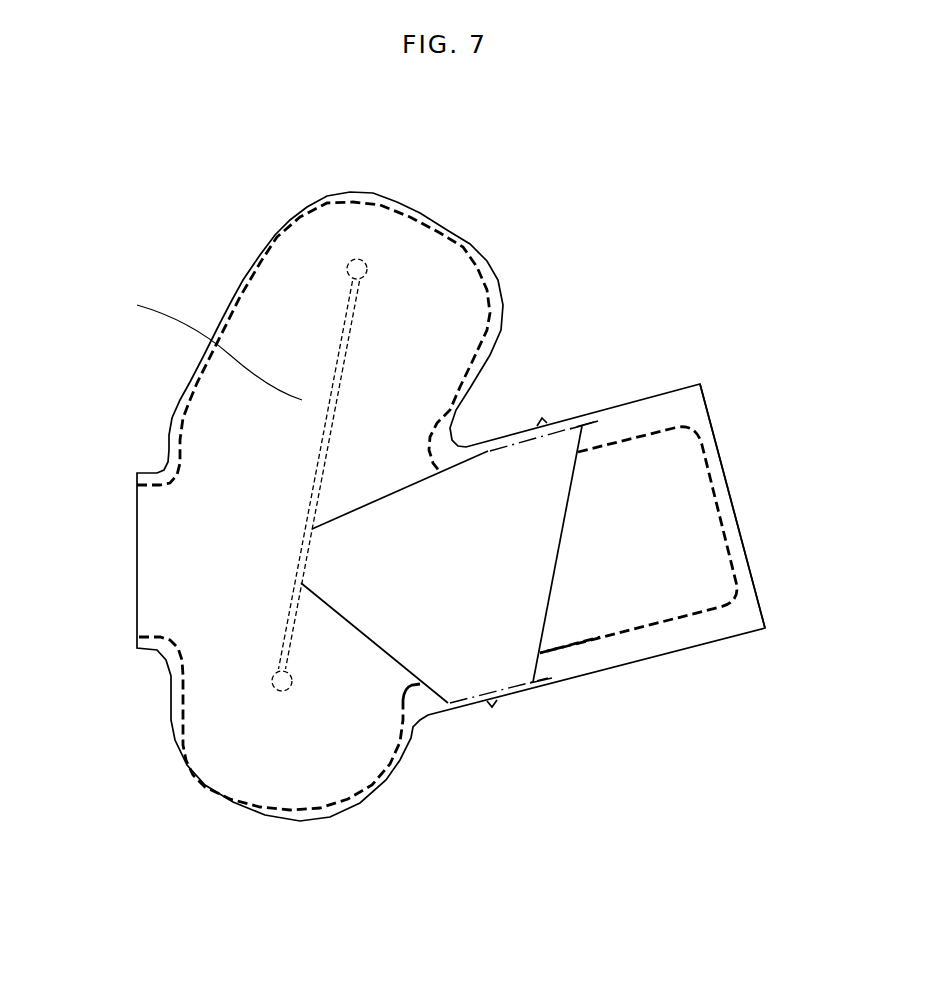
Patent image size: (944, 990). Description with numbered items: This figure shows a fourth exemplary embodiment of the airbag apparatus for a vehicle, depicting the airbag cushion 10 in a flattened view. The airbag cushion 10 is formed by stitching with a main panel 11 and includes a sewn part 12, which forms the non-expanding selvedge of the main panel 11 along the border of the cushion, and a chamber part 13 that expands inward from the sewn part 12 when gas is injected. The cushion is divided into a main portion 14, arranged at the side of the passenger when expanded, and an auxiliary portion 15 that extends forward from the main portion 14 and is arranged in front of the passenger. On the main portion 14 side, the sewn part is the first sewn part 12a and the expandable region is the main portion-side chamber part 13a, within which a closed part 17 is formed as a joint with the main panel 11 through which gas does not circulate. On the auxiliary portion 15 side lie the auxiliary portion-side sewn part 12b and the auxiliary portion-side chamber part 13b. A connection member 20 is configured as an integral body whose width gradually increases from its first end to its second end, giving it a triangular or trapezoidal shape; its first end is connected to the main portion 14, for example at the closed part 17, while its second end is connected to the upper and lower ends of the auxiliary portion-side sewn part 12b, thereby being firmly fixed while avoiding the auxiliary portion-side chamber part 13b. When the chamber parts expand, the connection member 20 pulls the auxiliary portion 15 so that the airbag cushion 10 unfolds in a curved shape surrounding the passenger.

The airbag cushion 10 is at (451, 463).
The main panel 11 is at (467, 233).
The sewn part 12 is at (444, 774).
The first sewn part 12a is at (278, 807).
The auxiliary portion-side sewn part 12b is at (680, 617).
The chamber part 13 is at (505, 382).
The main portion-side chamber part 13a is at (307, 267).
The auxiliary portion-side chamber part 13b is at (655, 488).
The main portion 14 is at (303, 405).
The auxiliary portion 15 is at (648, 536).
The closed part 17 is at (290, 615).
The connection member 20 is at (475, 647).